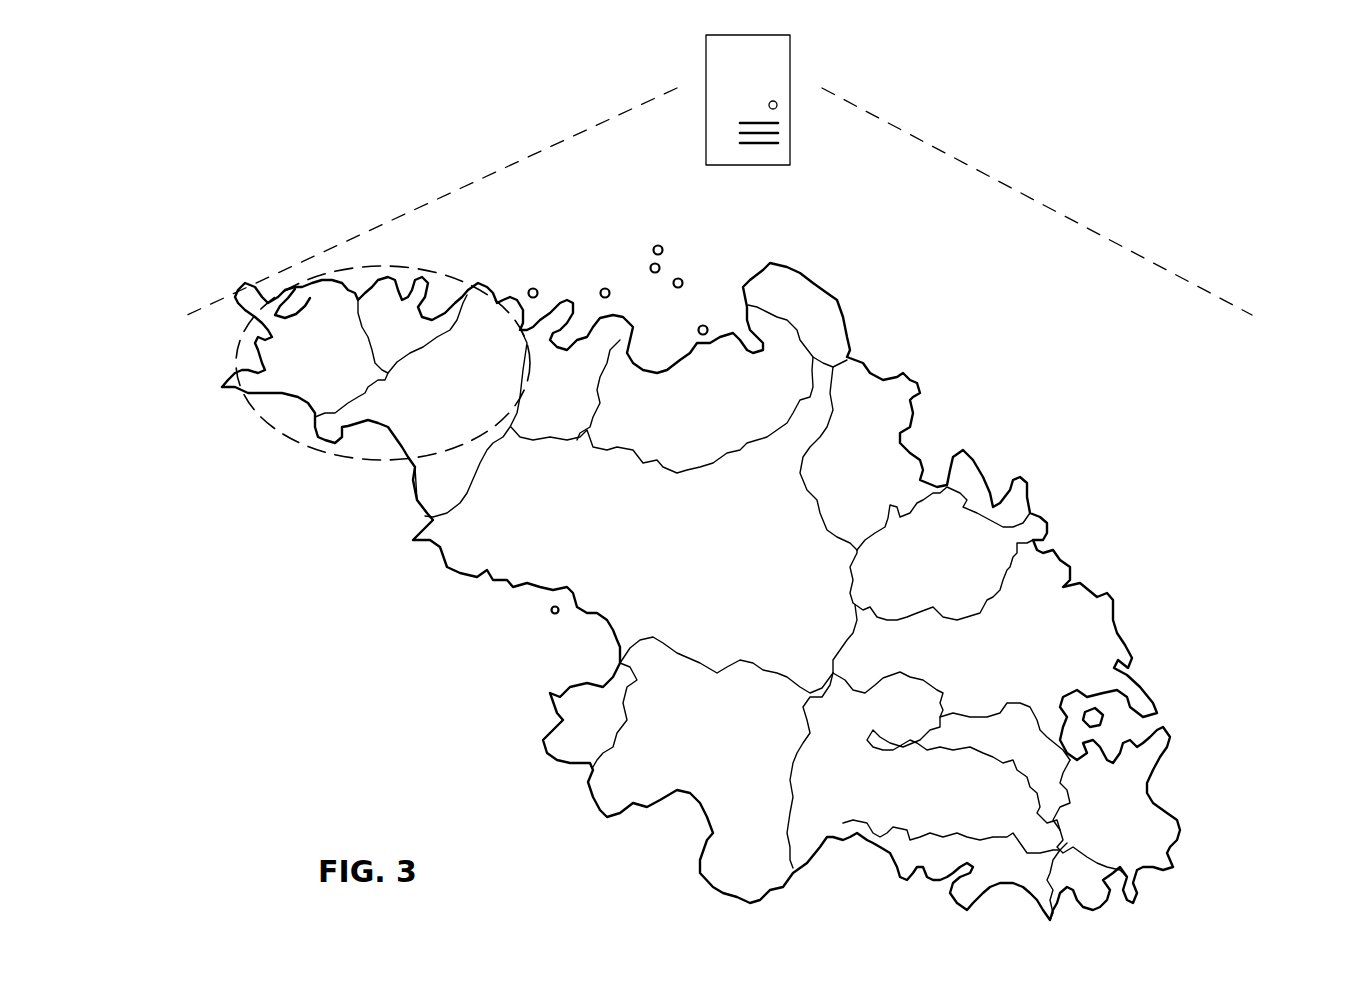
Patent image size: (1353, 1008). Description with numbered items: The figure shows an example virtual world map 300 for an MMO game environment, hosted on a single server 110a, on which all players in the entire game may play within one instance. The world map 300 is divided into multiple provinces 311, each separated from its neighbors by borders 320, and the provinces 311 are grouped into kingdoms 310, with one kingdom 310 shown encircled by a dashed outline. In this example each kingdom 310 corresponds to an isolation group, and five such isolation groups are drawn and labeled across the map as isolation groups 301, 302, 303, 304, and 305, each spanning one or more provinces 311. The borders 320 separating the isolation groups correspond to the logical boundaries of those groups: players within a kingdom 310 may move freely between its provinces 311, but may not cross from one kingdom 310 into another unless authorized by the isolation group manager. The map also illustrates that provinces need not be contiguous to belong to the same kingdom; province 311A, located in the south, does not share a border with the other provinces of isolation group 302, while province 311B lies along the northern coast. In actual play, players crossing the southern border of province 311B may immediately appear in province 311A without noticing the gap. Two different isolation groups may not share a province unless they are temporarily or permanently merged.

The server 110a is at (718, 159).
The world map 300 is at (205, 218).
The isolation group 301 is at (297, 359).
The isolation group 302 is at (541, 406).
The isolation group 303 is at (856, 469).
The isolation group 304 is at (711, 747).
The isolation group 305 is at (909, 569).
The kingdom 310 is at (296, 430).
The province 311 is at (447, 530).
The province 311A is at (545, 743).
The province 311B is at (790, 357).
The border 320 is at (1007, 570).